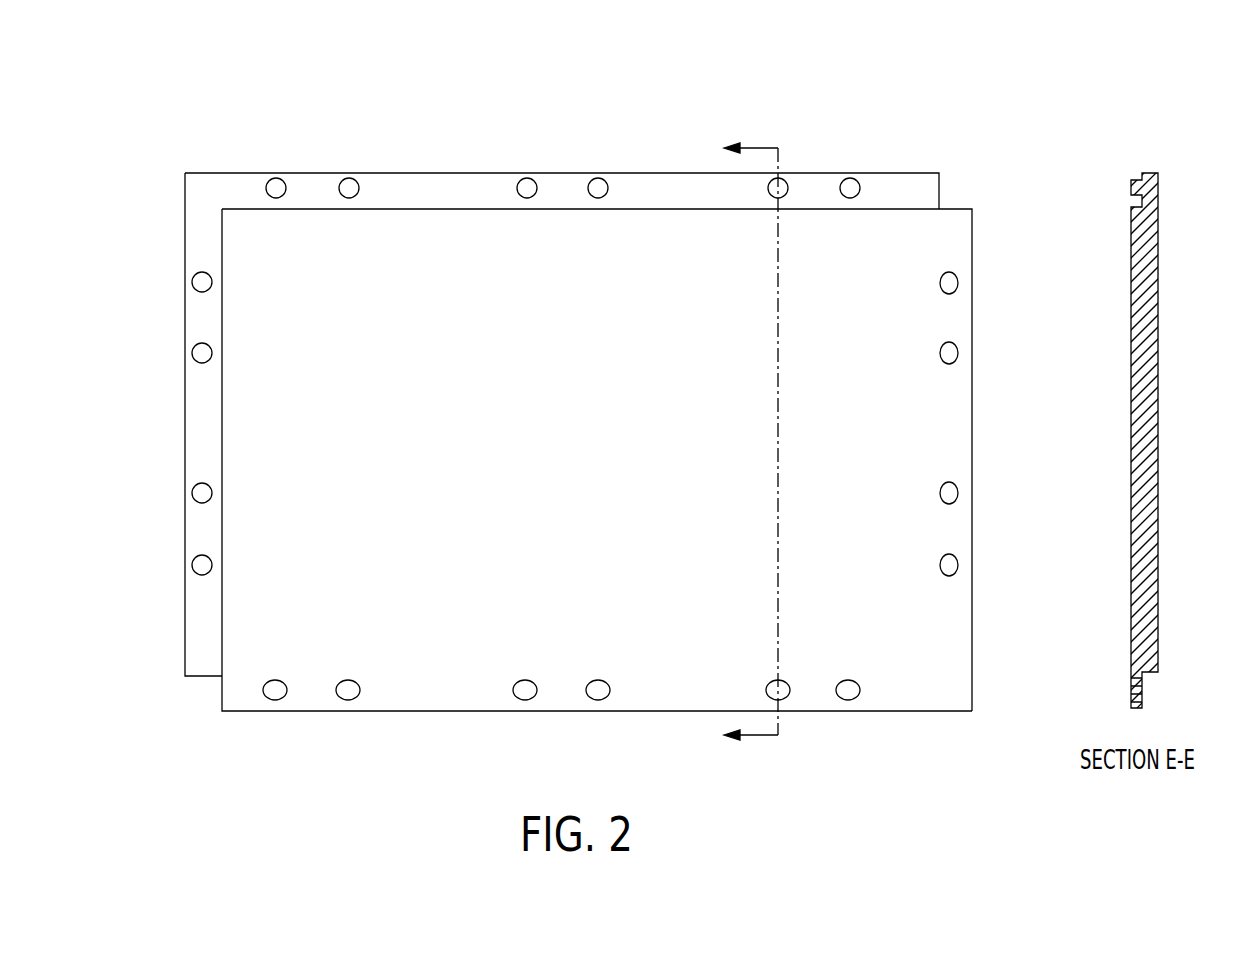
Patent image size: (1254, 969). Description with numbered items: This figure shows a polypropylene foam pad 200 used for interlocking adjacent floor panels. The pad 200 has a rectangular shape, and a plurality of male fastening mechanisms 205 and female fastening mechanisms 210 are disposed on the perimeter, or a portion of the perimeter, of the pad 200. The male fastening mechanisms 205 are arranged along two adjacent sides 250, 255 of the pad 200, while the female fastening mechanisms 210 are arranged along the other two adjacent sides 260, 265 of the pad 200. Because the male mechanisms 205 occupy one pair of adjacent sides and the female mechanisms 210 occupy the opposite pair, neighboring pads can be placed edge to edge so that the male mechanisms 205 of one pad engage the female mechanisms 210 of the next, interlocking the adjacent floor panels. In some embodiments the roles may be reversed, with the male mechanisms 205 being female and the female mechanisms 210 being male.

The polypropylene foam pad 200 is at (153, 125).
The male fastening mechanisms 205 is at (850, 178).
The female fastening mechanisms 210 is at (949, 355).
The side of the pad 250 is at (447, 197).
The side of the pad 255 is at (207, 430).
The side of the pad 260 is at (390, 695).
The side of the pad 265 is at (962, 217).